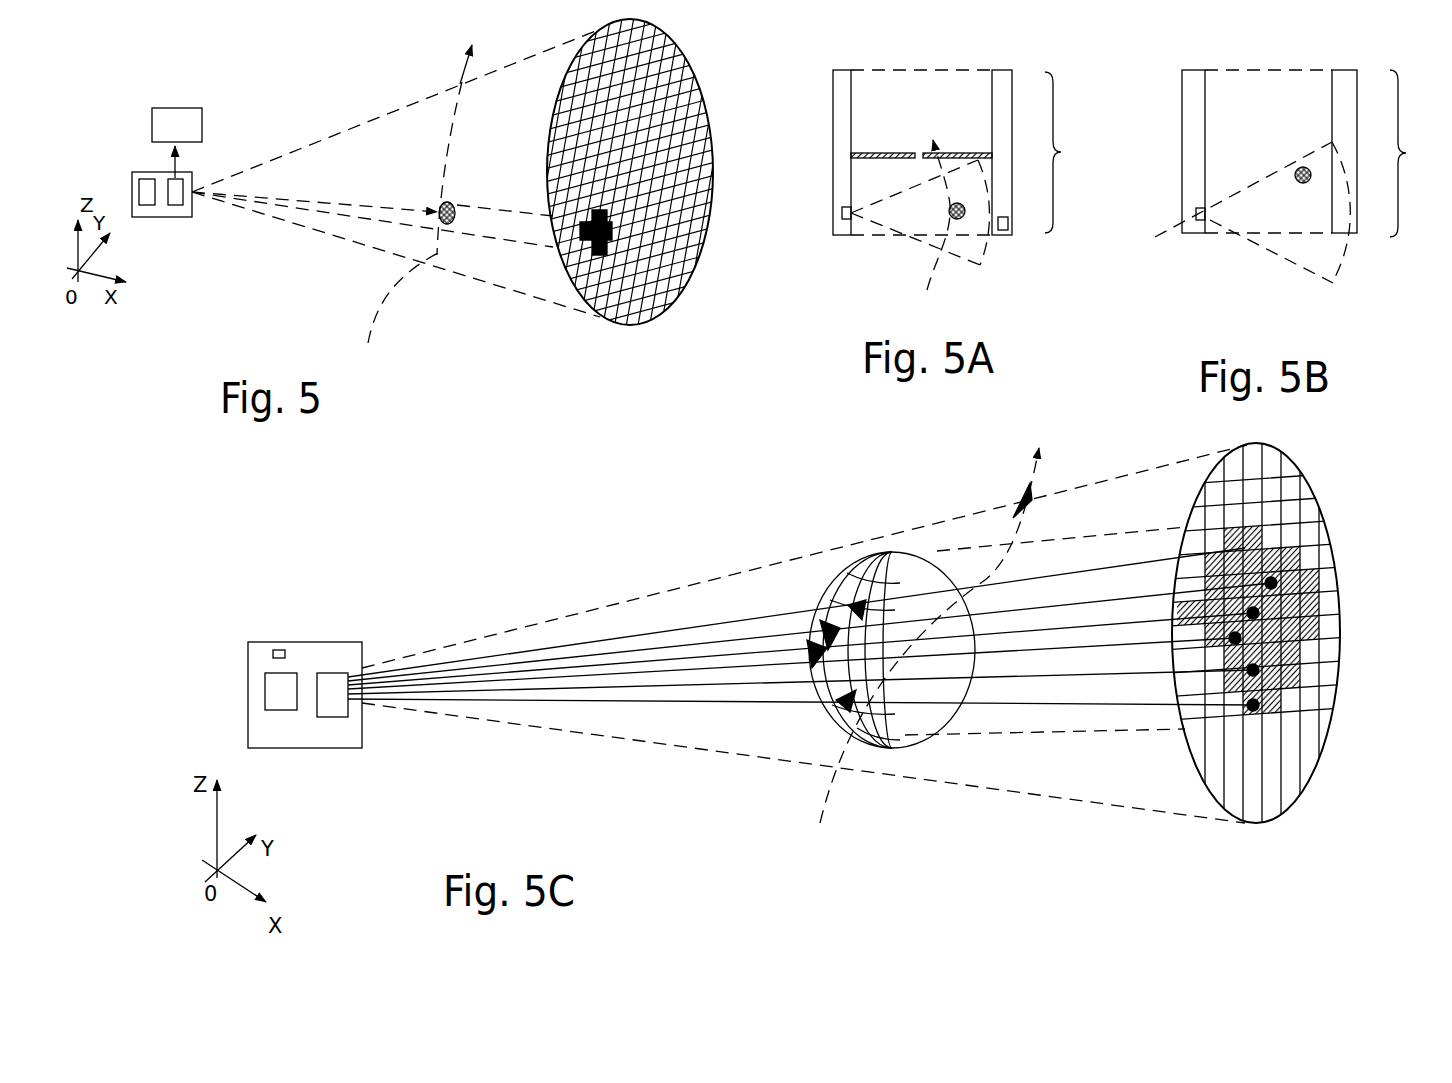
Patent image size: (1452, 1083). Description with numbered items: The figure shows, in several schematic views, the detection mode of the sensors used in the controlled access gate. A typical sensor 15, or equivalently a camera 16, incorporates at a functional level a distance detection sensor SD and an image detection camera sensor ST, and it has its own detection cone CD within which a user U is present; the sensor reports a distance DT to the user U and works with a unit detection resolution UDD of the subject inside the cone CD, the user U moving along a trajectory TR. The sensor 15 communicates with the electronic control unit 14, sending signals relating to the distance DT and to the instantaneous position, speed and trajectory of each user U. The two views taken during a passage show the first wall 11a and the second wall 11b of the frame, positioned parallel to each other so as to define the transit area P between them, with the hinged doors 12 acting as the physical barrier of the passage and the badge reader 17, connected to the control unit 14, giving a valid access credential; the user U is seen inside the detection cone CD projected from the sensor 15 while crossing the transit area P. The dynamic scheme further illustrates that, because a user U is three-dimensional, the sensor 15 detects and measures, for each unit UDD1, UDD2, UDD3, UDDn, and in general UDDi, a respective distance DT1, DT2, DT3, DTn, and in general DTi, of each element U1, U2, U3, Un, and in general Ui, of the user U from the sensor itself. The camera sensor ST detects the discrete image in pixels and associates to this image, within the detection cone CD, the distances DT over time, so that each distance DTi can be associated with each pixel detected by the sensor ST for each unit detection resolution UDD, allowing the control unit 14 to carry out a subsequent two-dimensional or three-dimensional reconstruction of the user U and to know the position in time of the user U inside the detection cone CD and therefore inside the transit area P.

In FIG. 5, the electronic control unit 14 is at (186, 136).
In FIG. 5, the sensor 15 is at (137, 165).
In FIG. 5A, the sensor 15 is at (811, 200).
In FIG. 5B, the sensor 15 is at (1163, 235).
In FIG. 5C, the sensor 15 is at (300, 659).
In FIG. 5, the camera 16 is at (140, 168).
In FIG. 5A, the camera 16 is at (845, 212).
In FIG. 5B, the camera 16 is at (1163, 235).
In FIG. 5C, the camera 16 is at (279, 639).
In FIG. 5A, the first wall 11a is at (842, 120).
In FIG. 5B, the first wall 11a is at (1192, 90).
In FIG. 5A, the second wall 11b is at (1005, 85).
In FIG. 5B, the second wall 11b is at (1347, 80).
In FIG. 5A, the hinged door 12 is at (872, 152).
In FIG. 5A, the badge reader 17 is at (1003, 231).
In FIG. 5, the distance detection sensor SD is at (147, 200).
In FIG. 5C, the distance detection sensor SD is at (283, 700).
In FIG. 5, the image detection camera sensor ST is at (174, 200).
In FIG. 5C, the image detection camera sensor ST is at (335, 705).
In FIG. 5, the distance DT is at (320, 203).
In FIG. 5C, the first distance DT1 is at (540, 668).
In FIG. 5C, the second distance DT2 is at (644, 661).
In FIG. 5C, the third distance DT3 is at (520, 685).
In FIG. 5C, the n-th distance DTn is at (575, 690).
In FIG. 5C, the i-th distance DTi is at (632, 694).
In FIG. 5, the detection cone CD is at (359, 246).
In FIG. 5A, the detection cone CD is at (895, 236).
In FIG. 5B, the detection cone CD is at (1279, 255).
In FIG. 5C, the detection cone CD is at (692, 745).
In FIG. 5, the trajectory TR is at (460, 82).
In FIG. 5A, the trajectory TR is at (949, 223).
In FIG. 5C, the trajectory TR is at (1017, 525).
In FIG. 5, the user U is at (455, 228).
In FIG. 5A, the user U is at (960, 220).
In FIG. 5B, the user U is at (1305, 185).
In FIG. 5C, the user U is at (921, 555).
In FIG. 5C, the first element of the user U1 is at (858, 627).
In FIG. 5C, the second element of the user U2 is at (853, 655).
In FIG. 5C, the third element of the user U3 is at (837, 672).
In FIG. 5C, the n-th element of the user Un is at (825, 690).
In FIG. 5C, the i-th element of the user Ui is at (837, 703).
In FIG. 5, the unit detection resolution UDD is at (599, 317).
In FIG. 5C, the first unit detection resolution UDD1 is at (1280, 547).
In FIG. 5C, the second unit detection resolution UDD2 is at (1271, 583).
In FIG. 5C, the third unit detection resolution UDD3 is at (1253, 613).
In FIG. 5C, the n-th unit detection resolution UDDn is at (1253, 670).
In FIG. 5C, the i-th unit detection resolution UDDi is at (1253, 705).
In FIG. 5A, the transit area P is at (1082, 169).
In FIG. 5B, the transit area P is at (1432, 172).